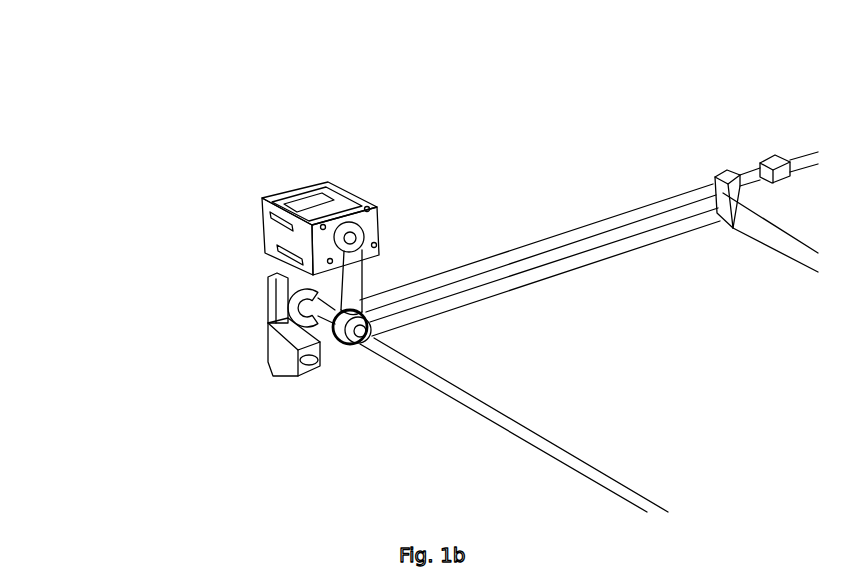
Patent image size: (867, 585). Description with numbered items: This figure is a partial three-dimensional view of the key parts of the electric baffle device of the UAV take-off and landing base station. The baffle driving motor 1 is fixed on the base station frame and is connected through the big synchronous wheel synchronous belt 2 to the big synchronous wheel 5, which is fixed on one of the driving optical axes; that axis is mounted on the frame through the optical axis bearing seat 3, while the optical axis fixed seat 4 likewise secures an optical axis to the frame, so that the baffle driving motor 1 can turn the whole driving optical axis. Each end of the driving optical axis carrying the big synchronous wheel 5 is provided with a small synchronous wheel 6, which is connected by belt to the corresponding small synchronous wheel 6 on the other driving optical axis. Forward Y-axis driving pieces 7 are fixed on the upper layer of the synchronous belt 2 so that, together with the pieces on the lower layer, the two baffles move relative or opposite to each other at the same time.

The baffle driving motor 1 is at (310, 195).
The big synchronous wheel synchronous belt 2 is at (341, 310).
The optical axis bearing seat 3 is at (269, 286).
The optical axis fixed seat 4 is at (268, 342).
The big synchronous wheel 5 is at (355, 342).
The small synchronous wheel 6 is at (360, 300).
The forward Y-axis driving piece 7 is at (726, 170).